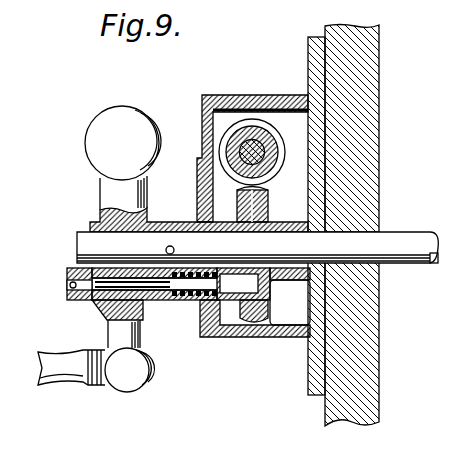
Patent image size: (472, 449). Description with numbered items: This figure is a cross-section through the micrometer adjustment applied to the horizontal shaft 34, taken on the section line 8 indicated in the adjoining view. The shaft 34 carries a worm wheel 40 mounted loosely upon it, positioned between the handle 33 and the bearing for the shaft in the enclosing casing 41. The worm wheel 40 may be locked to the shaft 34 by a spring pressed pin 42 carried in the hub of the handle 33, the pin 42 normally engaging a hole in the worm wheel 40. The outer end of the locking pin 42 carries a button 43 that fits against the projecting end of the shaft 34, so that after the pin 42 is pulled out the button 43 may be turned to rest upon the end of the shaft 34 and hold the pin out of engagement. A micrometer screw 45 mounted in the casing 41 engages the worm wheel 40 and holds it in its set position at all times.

The section line 8- 8 is at (250, 118).
The handle 33 is at (103, 192).
The horizontal shaft 34 is at (421, 245).
The worm wheel 40 is at (243, 338).
The enclosing casing 41 is at (318, 362).
The spring pressed pin 42 is at (232, 305).
The button 43 is at (87, 300).
The micrometer screw 45 is at (240, 135).